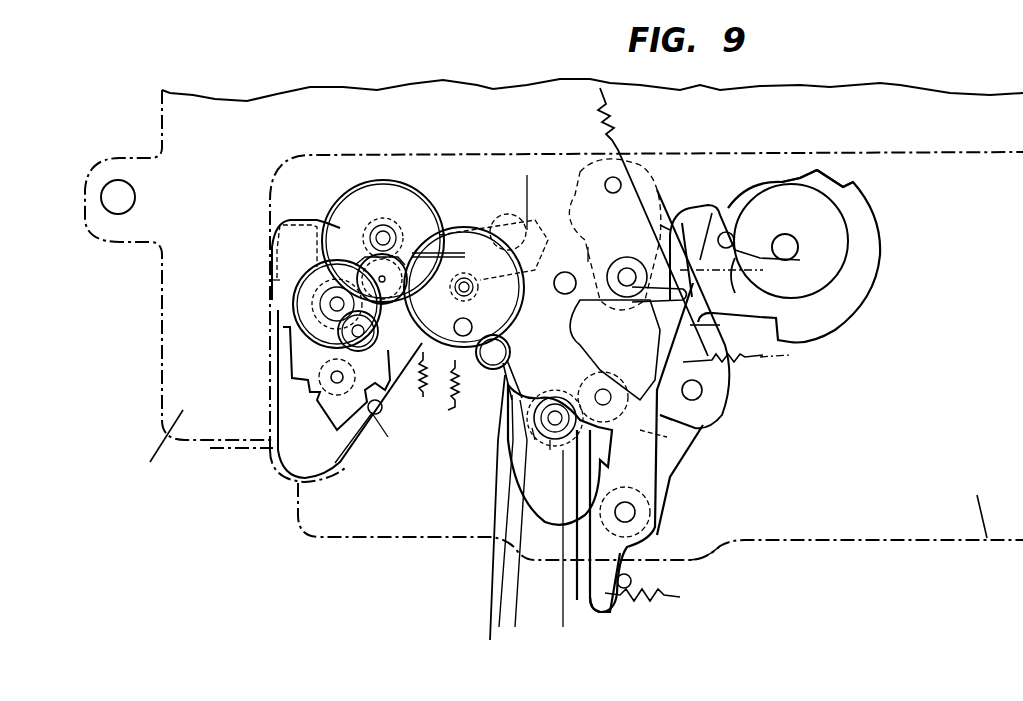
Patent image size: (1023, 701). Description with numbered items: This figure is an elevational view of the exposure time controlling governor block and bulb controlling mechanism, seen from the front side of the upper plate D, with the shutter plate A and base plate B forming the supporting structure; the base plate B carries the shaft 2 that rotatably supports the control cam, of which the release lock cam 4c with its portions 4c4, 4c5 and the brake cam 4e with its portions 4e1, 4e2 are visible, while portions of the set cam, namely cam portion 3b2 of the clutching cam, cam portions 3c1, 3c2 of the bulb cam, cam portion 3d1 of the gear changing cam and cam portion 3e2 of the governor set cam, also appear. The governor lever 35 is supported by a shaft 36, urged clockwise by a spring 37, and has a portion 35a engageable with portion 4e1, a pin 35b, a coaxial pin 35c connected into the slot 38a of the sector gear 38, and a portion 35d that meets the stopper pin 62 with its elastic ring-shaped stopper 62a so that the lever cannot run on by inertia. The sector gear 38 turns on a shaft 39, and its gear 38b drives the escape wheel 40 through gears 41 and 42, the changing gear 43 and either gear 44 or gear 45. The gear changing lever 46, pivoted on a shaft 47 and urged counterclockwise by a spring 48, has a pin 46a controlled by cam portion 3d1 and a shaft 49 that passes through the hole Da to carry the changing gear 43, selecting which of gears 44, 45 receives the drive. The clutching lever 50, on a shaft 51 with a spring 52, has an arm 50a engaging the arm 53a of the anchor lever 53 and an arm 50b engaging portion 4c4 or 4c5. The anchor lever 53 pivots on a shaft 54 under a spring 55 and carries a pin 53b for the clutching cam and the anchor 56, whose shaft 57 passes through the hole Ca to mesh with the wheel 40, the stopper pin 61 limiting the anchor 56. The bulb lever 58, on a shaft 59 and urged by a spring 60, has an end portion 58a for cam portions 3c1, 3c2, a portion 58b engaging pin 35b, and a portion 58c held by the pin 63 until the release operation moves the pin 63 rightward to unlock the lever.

The shaft 2 is at (800, 243).
The release lock cam 4c is at (868, 250).
The release lock cam portion 4c4 is at (842, 186).
The release lock cam portion 4c5 is at (800, 178).
The brake cam 4e is at (832, 240).
The brake cam portion 4e1 is at (712, 213).
The brake cam portion 4e2 is at (650, 257).
The clutching cam portion 3b2 is at (560, 240).
The bulb cam portion 3c1 is at (655, 268).
The bulb cam portion 3c2 is at (777, 355).
The gear changing cam portion 3d1 is at (388, 437).
The governor set cam portion 3e2 is at (672, 420).
The governor lever 35 is at (697, 408).
The governor lever portion 35a is at (650, 300).
The pin 35b is at (535, 440).
The pin 35c is at (550, 450).
The governor lever portion 35d is at (660, 293).
The shaft 36 is at (703, 390).
The spring 37 is at (700, 385).
The sector gear 38 is at (490, 640).
The slot 38a is at (515, 627).
The gear 38b is at (499, 627).
The shaft 39 is at (667, 437).
The escape wheel 40 is at (313, 290).
The gear 41 is at (500, 373).
The gear 42 is at (466, 228).
The changing gear 43 is at (398, 185).
The gear 44 is at (432, 230).
The gear 45 is at (345, 338).
The gear changing lever 46 is at (395, 255).
The pin 46a is at (491, 370).
The shaft 47 is at (460, 240).
The spring 48 is at (420, 398).
The shaft 49 is at (378, 225).
The clutching lever 50 is at (588, 230).
The arm 50a is at (528, 175).
The arm 50b is at (728, 232).
The shaft 51 is at (620, 178).
The spring 52 is at (616, 150).
The anchor lever 53 is at (487, 225).
The arm 53a is at (580, 284).
The pin 53b is at (508, 214).
The shaft 54 is at (442, 363).
The spring 55 is at (455, 380).
The anchor 56 is at (318, 392).
The shaft 57 is at (330, 372).
The bulb lever 58 is at (662, 497).
The end portion 58a is at (700, 320).
The bulb lever portion 58b is at (563, 627).
The bulb lever portion 58c is at (610, 608).
The shaft 59 is at (693, 560).
The spring 60 is at (661, 598).
The stopper pin 61 is at (368, 405).
The stopper pin 62 is at (683, 250).
The ring-shaped stopper 62a is at (662, 250).
The pin 63 is at (631, 582).
The shutter plate A is at (156, 449).
The base plate B is at (986, 538).
The hole Ca is at (320, 372).
The upper plate D is at (667, 472).
The hole Da is at (352, 330).